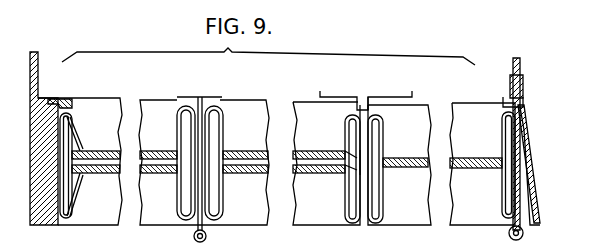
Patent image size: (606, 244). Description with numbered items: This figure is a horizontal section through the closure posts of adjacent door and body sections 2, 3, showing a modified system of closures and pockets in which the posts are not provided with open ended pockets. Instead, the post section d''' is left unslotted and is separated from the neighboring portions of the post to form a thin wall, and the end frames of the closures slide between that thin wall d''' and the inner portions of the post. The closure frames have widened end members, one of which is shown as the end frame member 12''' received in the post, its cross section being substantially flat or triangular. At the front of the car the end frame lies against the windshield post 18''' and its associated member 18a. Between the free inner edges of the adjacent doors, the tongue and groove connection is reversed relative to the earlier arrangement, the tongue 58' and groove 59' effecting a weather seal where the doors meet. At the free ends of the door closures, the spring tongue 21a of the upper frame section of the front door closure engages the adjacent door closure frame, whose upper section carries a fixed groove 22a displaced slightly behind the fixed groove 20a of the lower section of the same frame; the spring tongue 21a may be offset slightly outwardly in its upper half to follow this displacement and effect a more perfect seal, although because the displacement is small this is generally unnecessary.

The wall panel section 3 is at (143, 213).
The wall panel 2 is at (260, 218).
The tongue 58' is at (366, 89).
The groove 59' is at (390, 112).
The post section d''' is at (336, 147).
The fixed groove 22a is at (355, 182).
The fixed groove 20a is at (358, 188).
The spring tongue 21a is at (383, 178).
The end frame member 12''' is at (482, 164).
The cover strip 18a is at (532, 207).
The windshield post 18''' is at (534, 151).